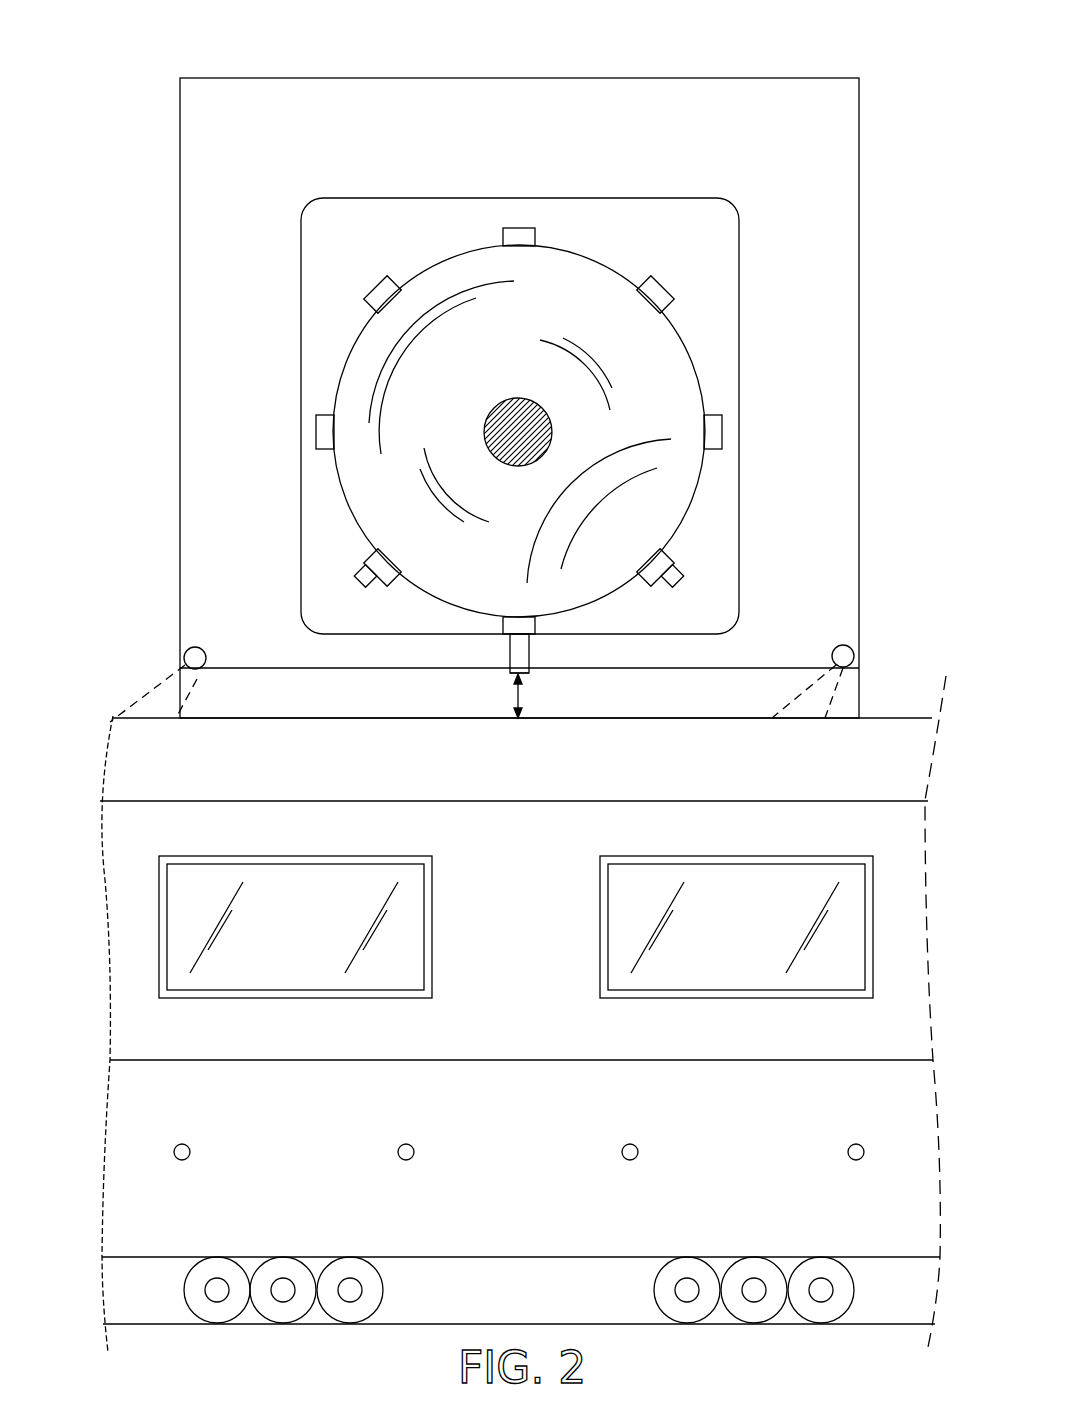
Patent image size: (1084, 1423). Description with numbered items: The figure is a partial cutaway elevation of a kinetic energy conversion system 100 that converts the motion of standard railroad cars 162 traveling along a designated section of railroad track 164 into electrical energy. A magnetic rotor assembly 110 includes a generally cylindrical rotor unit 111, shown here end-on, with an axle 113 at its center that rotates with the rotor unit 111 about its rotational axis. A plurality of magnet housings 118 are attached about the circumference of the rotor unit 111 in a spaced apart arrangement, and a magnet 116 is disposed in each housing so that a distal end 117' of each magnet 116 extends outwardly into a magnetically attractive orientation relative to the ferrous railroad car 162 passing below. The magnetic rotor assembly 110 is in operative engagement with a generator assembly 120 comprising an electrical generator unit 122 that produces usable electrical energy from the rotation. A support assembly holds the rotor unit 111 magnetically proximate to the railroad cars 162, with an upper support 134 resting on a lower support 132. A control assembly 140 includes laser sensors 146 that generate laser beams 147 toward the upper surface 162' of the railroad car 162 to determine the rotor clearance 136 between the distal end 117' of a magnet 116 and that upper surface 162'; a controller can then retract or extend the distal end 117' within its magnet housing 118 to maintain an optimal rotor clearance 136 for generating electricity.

The kinetic energy conversion system 100 is at (243, 42).
The magnetic rotor assembly 110 is at (600, 230).
The rotor unit 111 is at (693, 375).
The axle 113 is at (553, 430).
The magnet 116 is at (372, 572).
The distal end 117' is at (482, 690).
The magnet housing 118 is at (316, 432).
The generator assembly 120 is at (757, 226).
The electrical generator unit 122 is at (740, 309).
The lower support 132 is at (860, 690).
The upper support 134 is at (859, 510).
The rotor clearance 136 is at (524, 697).
The control assembly 140 is at (128, 664).
The laser sensor 146 is at (195, 647).
The laser beam 147 is at (193, 684).
The railroad car 162 is at (514, 773).
The upper surface 162' is at (522, 699).
The railroad track 164 is at (722, 1325).